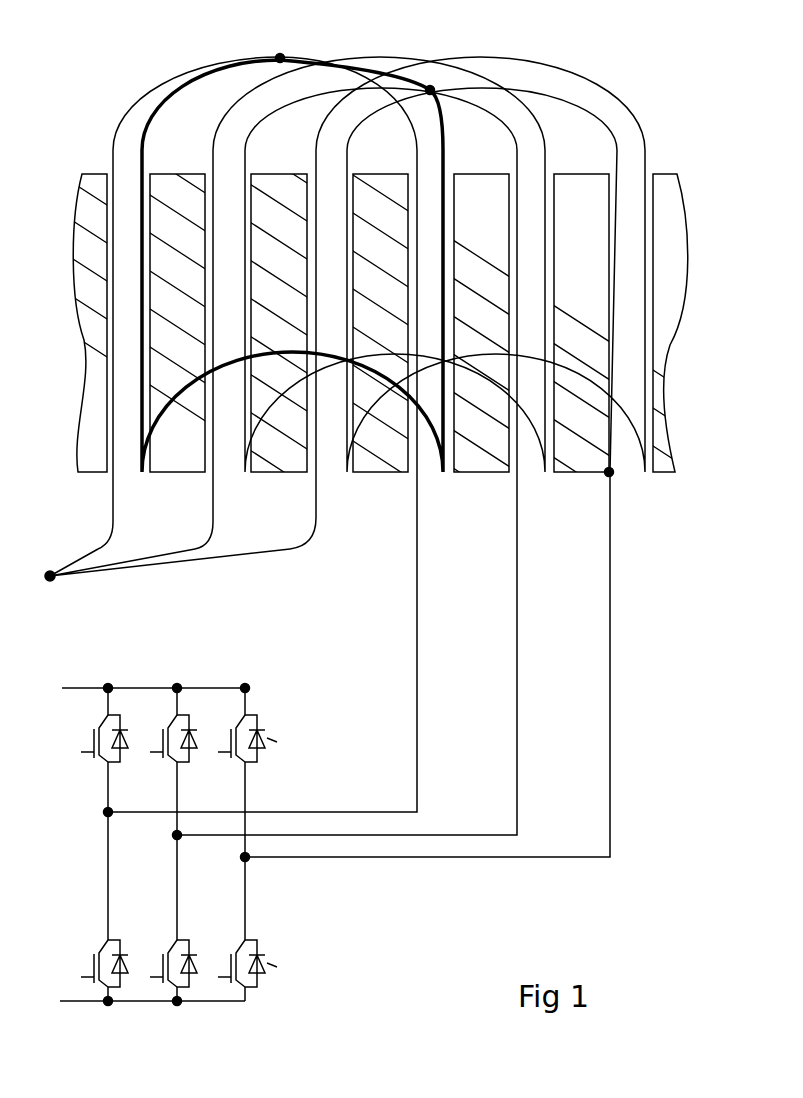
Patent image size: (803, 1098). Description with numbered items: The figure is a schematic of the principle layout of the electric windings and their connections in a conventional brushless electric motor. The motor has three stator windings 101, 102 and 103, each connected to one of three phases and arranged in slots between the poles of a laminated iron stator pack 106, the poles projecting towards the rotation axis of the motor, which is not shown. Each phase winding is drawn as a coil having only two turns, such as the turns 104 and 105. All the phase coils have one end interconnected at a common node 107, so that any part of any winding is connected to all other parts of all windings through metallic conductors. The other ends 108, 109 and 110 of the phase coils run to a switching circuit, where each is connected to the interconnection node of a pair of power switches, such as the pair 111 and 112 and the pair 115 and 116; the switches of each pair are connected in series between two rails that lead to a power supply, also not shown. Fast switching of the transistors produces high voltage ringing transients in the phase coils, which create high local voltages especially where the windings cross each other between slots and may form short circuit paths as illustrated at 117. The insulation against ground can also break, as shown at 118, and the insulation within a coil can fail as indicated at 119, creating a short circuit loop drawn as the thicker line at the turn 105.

The stator winding 101 is at (250, 280).
The stator winding 102 is at (362, 38).
The stator winding 103 is at (505, 42).
The turn 104 is at (107, 103).
The turn 105 is at (127, 150).
The laminated iron stator pack 106 is at (78, 163).
The common node 107 is at (74, 590).
The other end of phase coil 108 is at (412, 700).
The other end of phase coil 109 is at (528, 632).
The other end of phase coil 110 is at (465, 663).
The power switch 111 is at (80, 767).
The power switch 112 is at (68, 992).
The power switch 115 is at (282, 752).
The power switch 116 is at (282, 978).
The short circuit path 117 is at (415, 105).
The insulation breakdown against ground 118 is at (628, 483).
The insulation failure within coil 119 is at (267, 37).